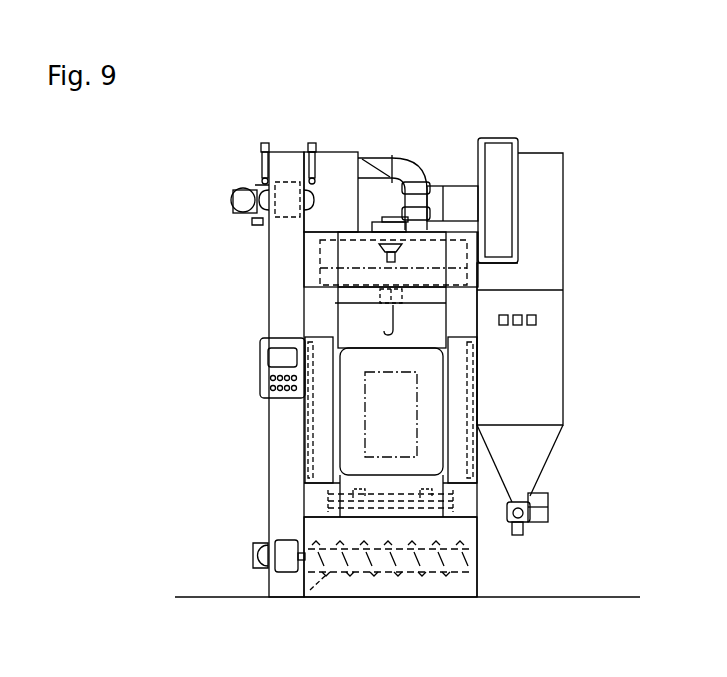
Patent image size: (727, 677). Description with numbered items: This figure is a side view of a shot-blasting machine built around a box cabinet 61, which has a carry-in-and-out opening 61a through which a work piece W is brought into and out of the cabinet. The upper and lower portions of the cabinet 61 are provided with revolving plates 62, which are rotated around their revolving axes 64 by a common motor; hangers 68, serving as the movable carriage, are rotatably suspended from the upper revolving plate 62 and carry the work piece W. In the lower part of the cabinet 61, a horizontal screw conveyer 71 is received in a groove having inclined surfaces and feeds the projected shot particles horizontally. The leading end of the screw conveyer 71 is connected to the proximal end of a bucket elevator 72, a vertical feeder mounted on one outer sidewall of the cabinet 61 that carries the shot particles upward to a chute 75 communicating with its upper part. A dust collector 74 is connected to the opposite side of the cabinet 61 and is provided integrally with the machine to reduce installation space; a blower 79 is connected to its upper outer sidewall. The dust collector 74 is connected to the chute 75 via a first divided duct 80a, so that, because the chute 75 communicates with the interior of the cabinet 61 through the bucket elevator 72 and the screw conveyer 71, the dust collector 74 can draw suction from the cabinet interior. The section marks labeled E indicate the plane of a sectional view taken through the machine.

The box cabinet 61 is at (303, 328).
The carry-in-and-out opening 61a is at (352, 363).
The revolving plate 62 is at (320, 272).
The revolving axis 64 is at (383, 257).
The hanger 68 is at (390, 330).
The horizontal screw conveyer 71 is at (347, 601).
The bucket elevator 72 is at (266, 448).
The dust collector 74 is at (575, 212).
The chute 75 is at (335, 152).
The blower 79 is at (498, 130).
The first divided duct 80a is at (415, 152).
The work piece W is at (365, 415).
The section line E- E is at (528, 122).